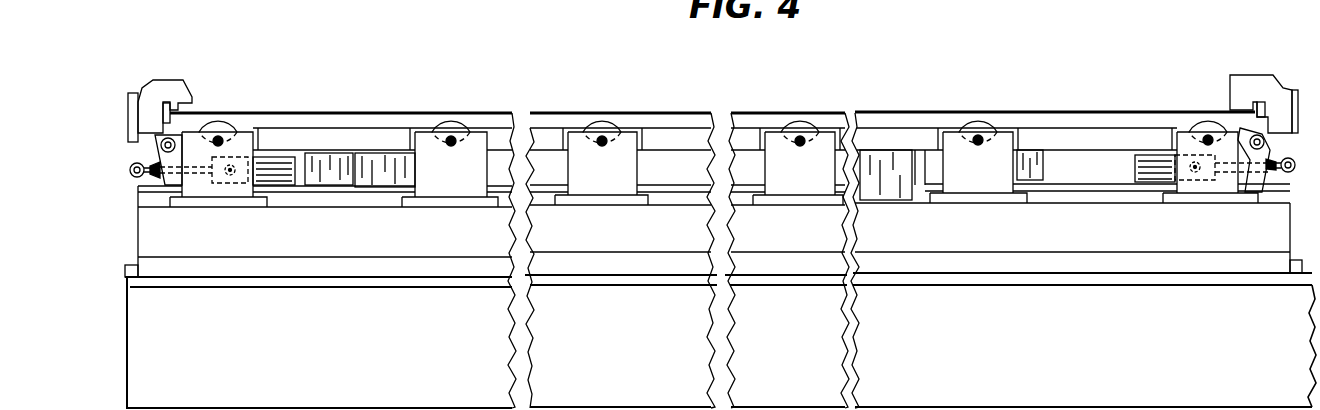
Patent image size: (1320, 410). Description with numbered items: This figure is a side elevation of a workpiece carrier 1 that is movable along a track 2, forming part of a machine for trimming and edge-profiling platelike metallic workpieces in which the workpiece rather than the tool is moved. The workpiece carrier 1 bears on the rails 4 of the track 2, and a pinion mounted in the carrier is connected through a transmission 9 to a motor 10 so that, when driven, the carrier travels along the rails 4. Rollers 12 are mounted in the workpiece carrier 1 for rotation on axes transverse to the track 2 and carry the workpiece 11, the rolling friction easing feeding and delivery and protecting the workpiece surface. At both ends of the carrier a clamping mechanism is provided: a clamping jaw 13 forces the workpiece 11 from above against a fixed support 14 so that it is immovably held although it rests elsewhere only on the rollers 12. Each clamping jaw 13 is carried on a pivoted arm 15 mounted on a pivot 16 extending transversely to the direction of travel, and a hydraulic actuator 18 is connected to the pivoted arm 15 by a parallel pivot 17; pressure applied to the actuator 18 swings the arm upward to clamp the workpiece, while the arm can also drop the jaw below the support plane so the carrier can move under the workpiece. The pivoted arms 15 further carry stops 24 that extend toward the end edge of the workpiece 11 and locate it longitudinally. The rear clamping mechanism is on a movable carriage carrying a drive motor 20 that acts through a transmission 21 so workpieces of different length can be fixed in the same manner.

The workpiece carrier 1 is at (714, 264).
The track 2 is at (720, 334).
The rail 4 is at (151, 295).
The transmission 9 is at (892, 107).
The motor 10 is at (1036, 97).
The workpiece 11 is at (712, 64).
The roller 12 is at (710, 106).
The clamping jaw 13 is at (712, 103).
The fixed support 14 is at (716, 82).
The pivoted arm 15 is at (712, 78).
The pivot 16 is at (712, 170).
The pivot 17 is at (713, 240).
The hydraulic actuator 18 is at (714, 240).
The drive motor 20 is at (390, 239).
The transmission 21 is at (338, 239).
The stop 24 is at (724, 69).